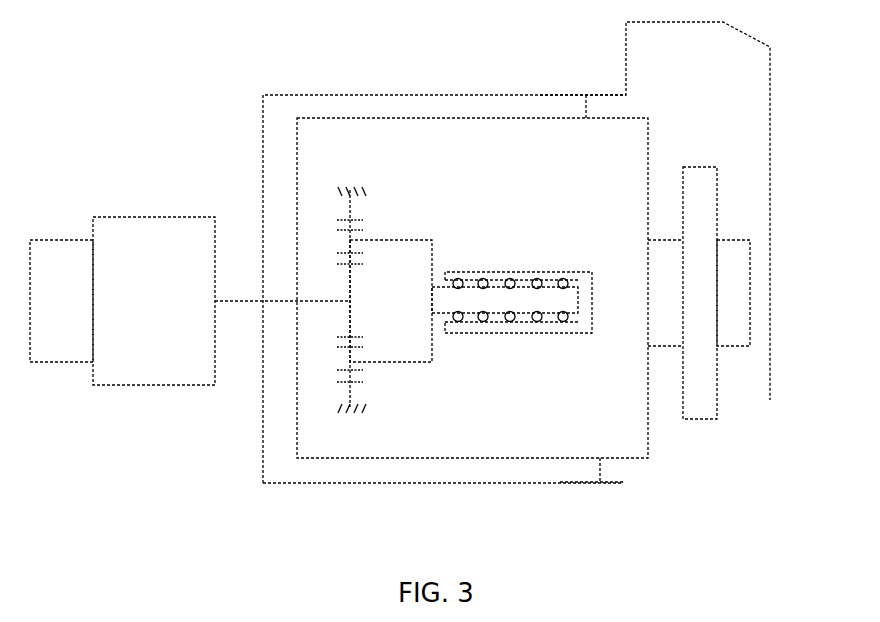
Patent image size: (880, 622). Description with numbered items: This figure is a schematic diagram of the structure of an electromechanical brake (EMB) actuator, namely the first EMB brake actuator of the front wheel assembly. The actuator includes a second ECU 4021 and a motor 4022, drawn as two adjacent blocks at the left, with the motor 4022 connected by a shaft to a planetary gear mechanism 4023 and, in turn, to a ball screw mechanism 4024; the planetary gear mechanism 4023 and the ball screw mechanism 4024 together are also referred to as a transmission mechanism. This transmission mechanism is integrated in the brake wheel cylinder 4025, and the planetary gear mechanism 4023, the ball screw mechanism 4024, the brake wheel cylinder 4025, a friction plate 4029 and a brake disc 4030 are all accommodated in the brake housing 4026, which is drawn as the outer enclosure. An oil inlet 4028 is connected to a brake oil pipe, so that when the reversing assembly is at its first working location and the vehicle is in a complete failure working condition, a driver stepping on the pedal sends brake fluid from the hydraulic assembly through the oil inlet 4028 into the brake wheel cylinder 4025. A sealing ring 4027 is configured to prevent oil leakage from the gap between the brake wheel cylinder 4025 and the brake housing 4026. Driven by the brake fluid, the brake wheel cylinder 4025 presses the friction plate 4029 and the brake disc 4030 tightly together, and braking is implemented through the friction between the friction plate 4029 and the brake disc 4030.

The second ECU 4021 is at (65, 240).
The motor 4022 is at (153, 217).
The planetary gear mechanism 4023 is at (342, 347).
The ball screw mechanism 4024 is at (567, 270).
The brake wheel cylinder 4025 is at (648, 458).
The brake housing 4026 is at (552, 95).
The sealing ring 4027 is at (595, 467).
The oil inlet 4028 is at (262, 155).
The friction plate 4029 is at (750, 342).
The brake disc 4030 is at (717, 419).